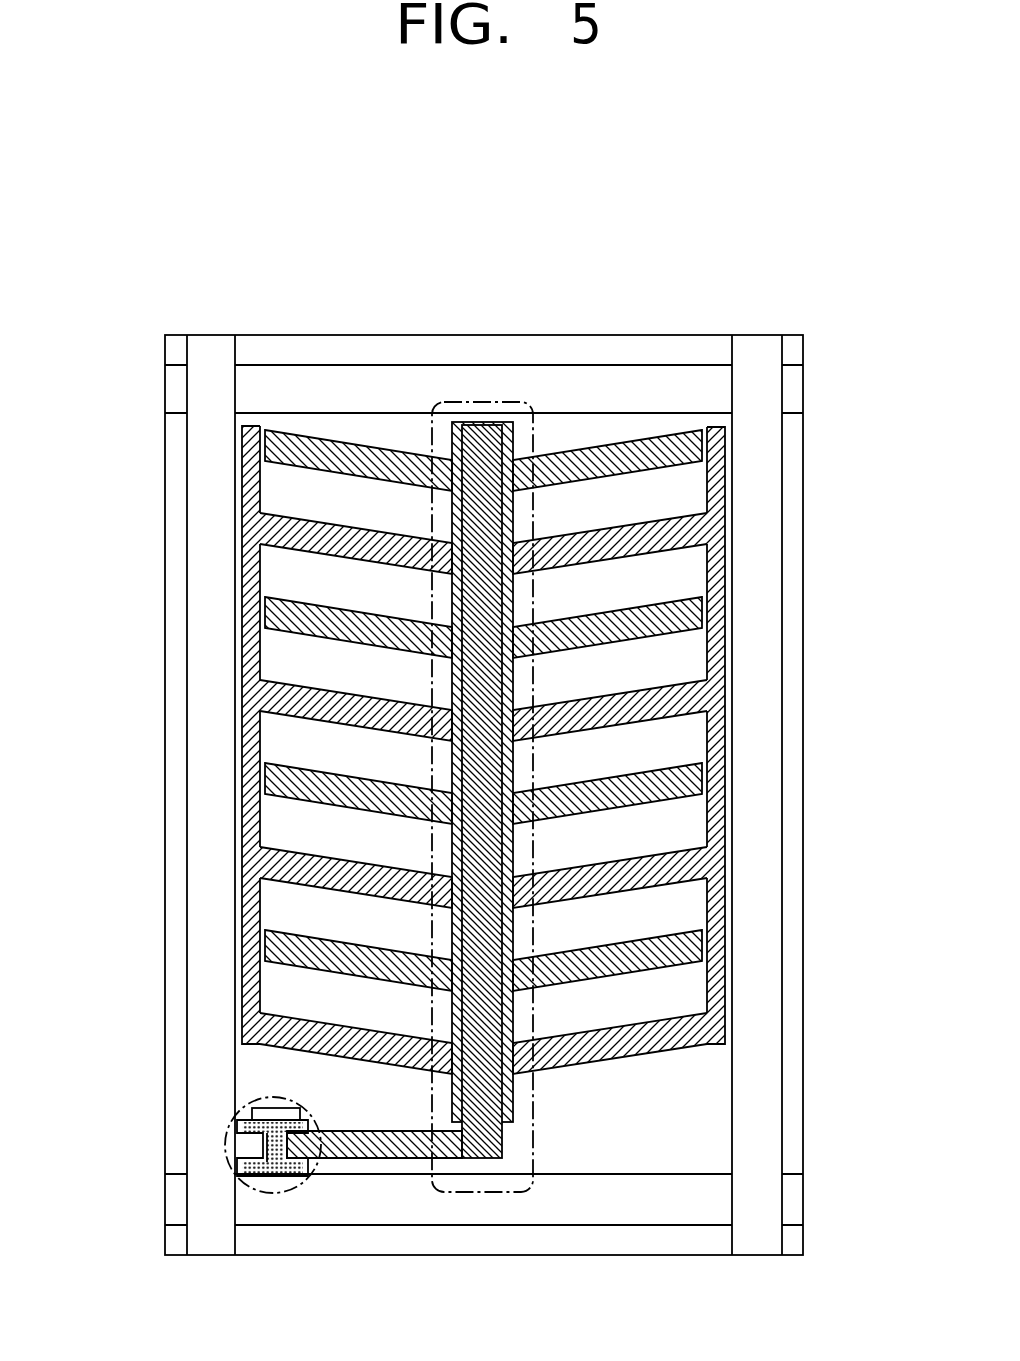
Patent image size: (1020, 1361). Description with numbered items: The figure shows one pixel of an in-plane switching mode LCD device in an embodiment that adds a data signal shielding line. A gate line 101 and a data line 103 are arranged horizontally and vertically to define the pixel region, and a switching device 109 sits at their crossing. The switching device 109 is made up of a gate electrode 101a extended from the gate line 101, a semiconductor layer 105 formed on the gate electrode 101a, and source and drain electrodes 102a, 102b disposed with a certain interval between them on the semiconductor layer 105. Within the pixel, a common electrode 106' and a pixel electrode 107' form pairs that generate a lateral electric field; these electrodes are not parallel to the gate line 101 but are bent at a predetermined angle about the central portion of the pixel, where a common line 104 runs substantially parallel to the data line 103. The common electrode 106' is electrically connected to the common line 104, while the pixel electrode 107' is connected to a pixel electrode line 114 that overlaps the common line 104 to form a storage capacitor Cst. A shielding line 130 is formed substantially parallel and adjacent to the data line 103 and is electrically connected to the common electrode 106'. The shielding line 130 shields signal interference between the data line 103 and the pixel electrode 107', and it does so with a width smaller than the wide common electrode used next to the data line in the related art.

The gate line 101 is at (400, 1218).
The gate electrode 101a is at (262, 1105).
The source electrode 102a is at (252, 1143).
The drain electrode 102b is at (297, 1177).
The data line 103 is at (210, 1245).
The common line 104 is at (518, 1098).
The semiconductor layer 105 is at (274, 1176).
The common electrode 106' is at (580, 792).
The pixel electrode 107' is at (582, 710).
The switching device 109 is at (222, 1169).
The pixel electrode line 114 is at (486, 1178).
The shielding line 130 is at (717, 748).
The storage capacitor Cst is at (487, 401).